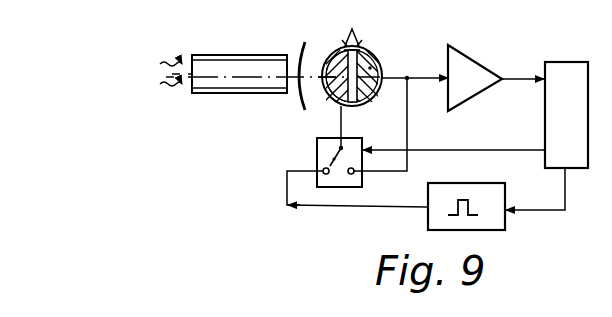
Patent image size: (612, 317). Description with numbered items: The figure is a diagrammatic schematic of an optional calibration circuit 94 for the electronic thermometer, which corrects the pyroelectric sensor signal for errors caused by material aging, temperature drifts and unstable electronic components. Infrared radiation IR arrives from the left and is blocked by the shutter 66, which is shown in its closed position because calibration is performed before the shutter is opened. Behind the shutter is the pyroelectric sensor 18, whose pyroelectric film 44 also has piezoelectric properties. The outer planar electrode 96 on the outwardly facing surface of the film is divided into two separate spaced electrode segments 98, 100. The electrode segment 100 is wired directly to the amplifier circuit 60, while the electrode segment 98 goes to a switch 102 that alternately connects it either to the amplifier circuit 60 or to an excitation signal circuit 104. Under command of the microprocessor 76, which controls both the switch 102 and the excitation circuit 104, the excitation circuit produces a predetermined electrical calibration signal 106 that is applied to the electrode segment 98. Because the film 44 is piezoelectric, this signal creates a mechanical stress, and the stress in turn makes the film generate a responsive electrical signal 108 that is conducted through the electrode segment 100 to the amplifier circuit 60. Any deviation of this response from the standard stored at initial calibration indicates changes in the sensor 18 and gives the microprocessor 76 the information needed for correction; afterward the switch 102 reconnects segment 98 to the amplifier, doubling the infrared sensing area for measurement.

The pyroelectric sensor 18 is at (326, 28).
The pyroelectric film 44 is at (373, 58).
The amplifier circuit 60 is at (477, 103).
The shutter 66 is at (293, 99).
The microprocessor 76 is at (554, 131).
The calibration circuit 94 is at (245, 172).
The outer planar electrode 96 is at (350, 30).
The electrode segment 98 is at (338, 90).
The electrode segment 100 is at (372, 67).
The switch 102 is at (319, 150).
The excitation signal circuit 104 is at (496, 207).
The electrical calibration signal 106 is at (394, 206).
The responsive electrical signal 108 is at (394, 84).
The infrared radiation IR is at (176, 83).